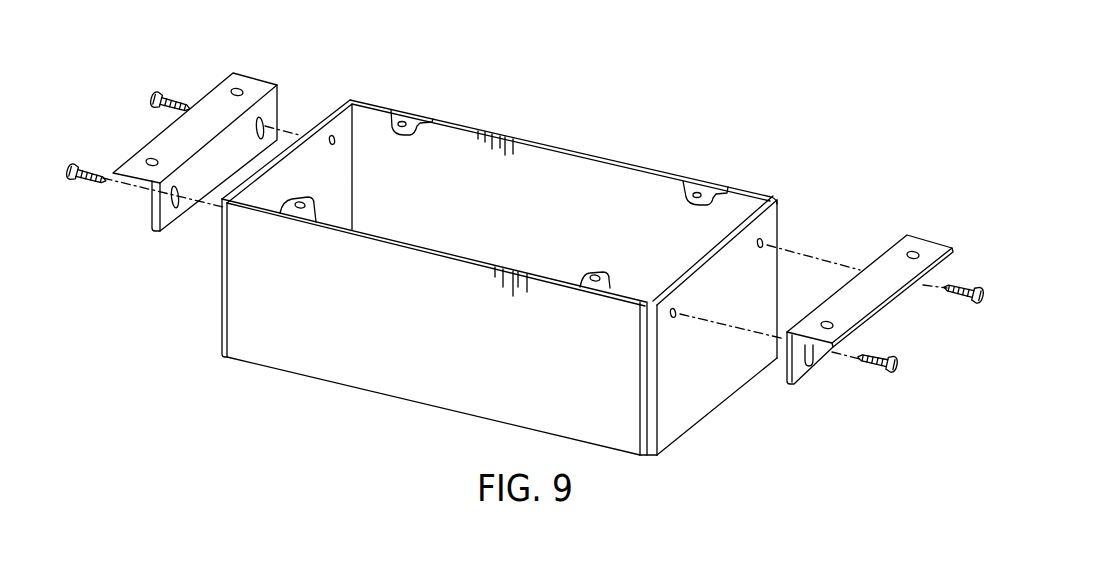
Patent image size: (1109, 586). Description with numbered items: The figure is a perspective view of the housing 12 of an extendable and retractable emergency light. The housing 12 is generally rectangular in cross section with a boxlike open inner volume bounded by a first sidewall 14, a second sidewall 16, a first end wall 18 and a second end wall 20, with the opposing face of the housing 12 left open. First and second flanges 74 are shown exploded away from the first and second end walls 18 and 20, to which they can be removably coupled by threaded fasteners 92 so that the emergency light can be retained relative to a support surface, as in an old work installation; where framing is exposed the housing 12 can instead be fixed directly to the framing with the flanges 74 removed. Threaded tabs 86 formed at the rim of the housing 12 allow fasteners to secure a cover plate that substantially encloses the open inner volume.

The housing 12 is at (499, 267).
The first sidewall 14 is at (563, 177).
The second sidewall 16 is at (381, 260).
The first end wall 18 is at (695, 388).
The second end wall 20 is at (339, 123).
The flange 74 is at (253, 77).
The threaded tab 86 is at (690, 208).
The threaded fastener 92 is at (153, 98).